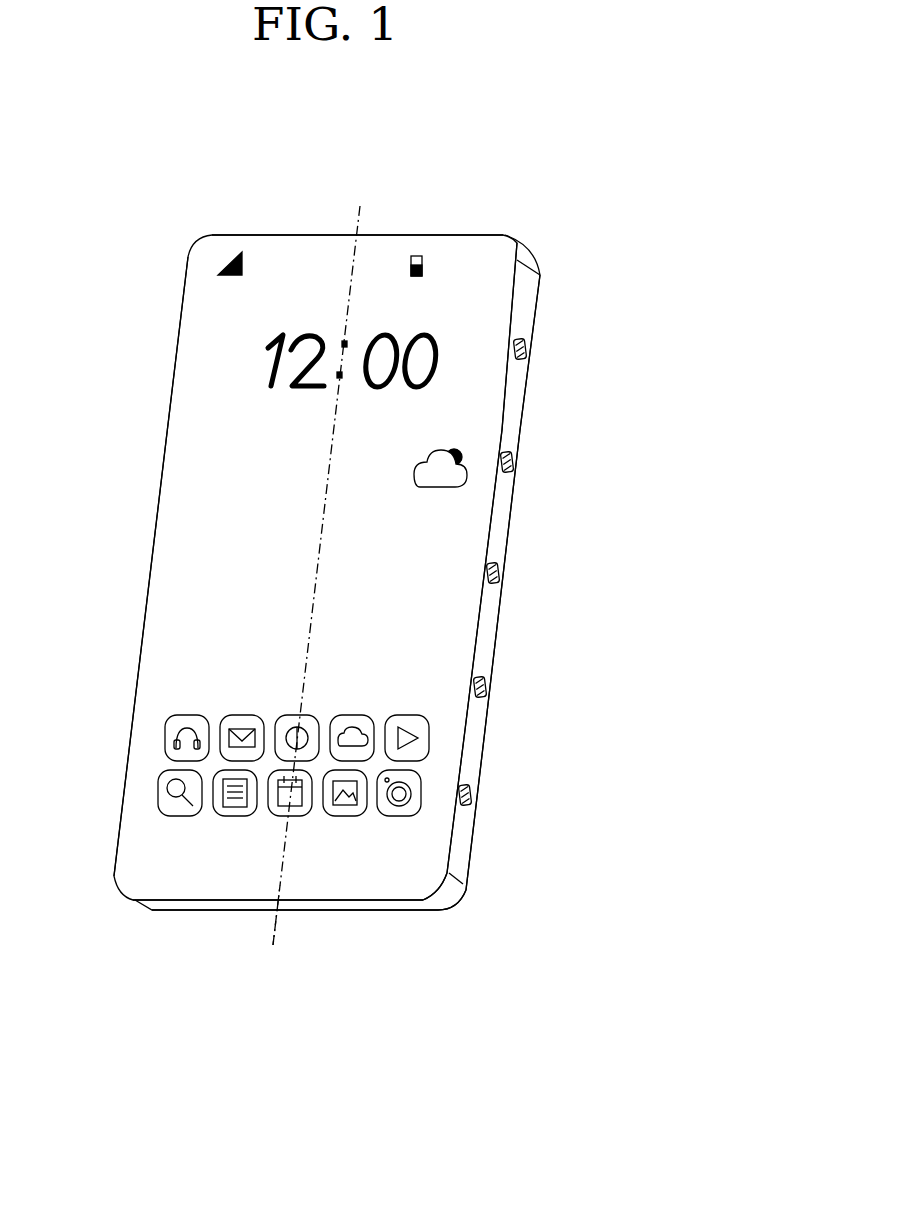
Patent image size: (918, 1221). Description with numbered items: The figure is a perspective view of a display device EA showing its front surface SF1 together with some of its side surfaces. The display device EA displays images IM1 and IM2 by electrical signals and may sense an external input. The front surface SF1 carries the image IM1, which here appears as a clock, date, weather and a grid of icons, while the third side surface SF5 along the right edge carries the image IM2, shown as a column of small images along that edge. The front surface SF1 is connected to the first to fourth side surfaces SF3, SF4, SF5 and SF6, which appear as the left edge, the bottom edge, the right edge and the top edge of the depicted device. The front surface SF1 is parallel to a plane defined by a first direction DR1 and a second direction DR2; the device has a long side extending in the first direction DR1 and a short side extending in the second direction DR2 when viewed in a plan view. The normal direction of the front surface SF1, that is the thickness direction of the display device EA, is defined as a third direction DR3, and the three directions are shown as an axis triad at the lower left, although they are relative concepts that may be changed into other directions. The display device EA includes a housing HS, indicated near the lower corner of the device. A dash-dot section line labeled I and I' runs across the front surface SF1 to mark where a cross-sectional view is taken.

The display device EA is at (574, 189).
The front surface SF1 is at (189, 857).
The first side surface SF3 is at (171, 397).
The second side surface SF4 is at (320, 905).
The third side surface SF5 is at (515, 400).
The fourth side surface SF6 is at (430, 233).
The image IM1 is at (184, 714).
The image IM2 is at (523, 346).
The housing HS is at (458, 906).
The section line I is at (316, 569).
The section line I' is at (252, 923).
The first direction DR1 is at (57, 1057).
The second direction DR2 is at (57, 1057).
The third direction DR3 is at (57, 1057).